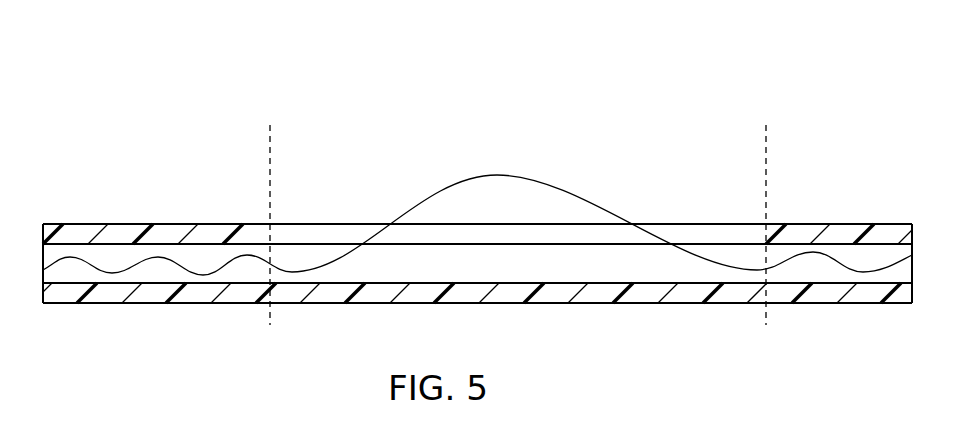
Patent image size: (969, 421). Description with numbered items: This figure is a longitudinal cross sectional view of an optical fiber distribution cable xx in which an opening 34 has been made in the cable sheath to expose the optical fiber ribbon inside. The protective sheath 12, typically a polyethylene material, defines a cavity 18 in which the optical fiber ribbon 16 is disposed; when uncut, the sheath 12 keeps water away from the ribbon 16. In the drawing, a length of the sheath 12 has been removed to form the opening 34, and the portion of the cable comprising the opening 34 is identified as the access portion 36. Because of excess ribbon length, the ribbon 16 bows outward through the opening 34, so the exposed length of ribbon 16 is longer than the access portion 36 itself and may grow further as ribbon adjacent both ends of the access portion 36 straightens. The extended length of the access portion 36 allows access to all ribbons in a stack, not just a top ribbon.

The sheath 12 is at (146, 304).
The optical fiber ribbon 16 is at (228, 266).
The cavity 18 is at (868, 256).
The opening 34 is at (656, 214).
The access portion 36 is at (272, 112).
The laminate assembly xx is at (160, 190).